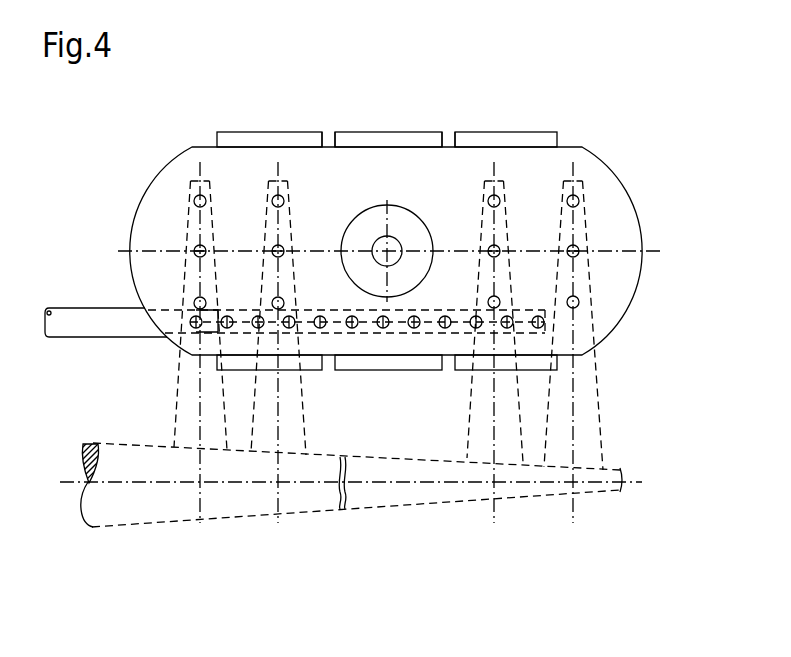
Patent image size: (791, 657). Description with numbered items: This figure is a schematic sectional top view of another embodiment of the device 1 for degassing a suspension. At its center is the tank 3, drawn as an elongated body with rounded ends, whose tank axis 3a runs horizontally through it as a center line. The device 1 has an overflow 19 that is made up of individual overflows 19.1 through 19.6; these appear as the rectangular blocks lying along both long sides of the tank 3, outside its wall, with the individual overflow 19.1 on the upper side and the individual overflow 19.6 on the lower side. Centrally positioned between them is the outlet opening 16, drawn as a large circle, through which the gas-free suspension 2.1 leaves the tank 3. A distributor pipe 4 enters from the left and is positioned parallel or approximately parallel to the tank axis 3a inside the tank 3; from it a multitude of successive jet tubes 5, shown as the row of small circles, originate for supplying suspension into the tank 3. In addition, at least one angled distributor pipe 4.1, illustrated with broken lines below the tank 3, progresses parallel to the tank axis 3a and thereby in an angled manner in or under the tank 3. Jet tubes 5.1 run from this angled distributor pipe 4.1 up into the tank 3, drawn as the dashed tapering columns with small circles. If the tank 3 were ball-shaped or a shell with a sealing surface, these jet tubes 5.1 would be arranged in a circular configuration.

The device 1 is at (365, 311).
The gas-free suspension 2.1 is at (417, 227).
The tank 3 is at (615, 170).
The tank axis 3a is at (655, 253).
The distributor pipe 4 is at (70, 339).
The angled distributor pipe 4.1 is at (147, 529).
The jet tubes 5 is at (192, 328).
The jet tubes 5.1 is at (578, 307).
The outlet opening 16 is at (407, 176).
The overflow 19 is at (406, 98).
The individual overflow 19.1 is at (502, 131).
The individual overflow 19.6 is at (398, 371).